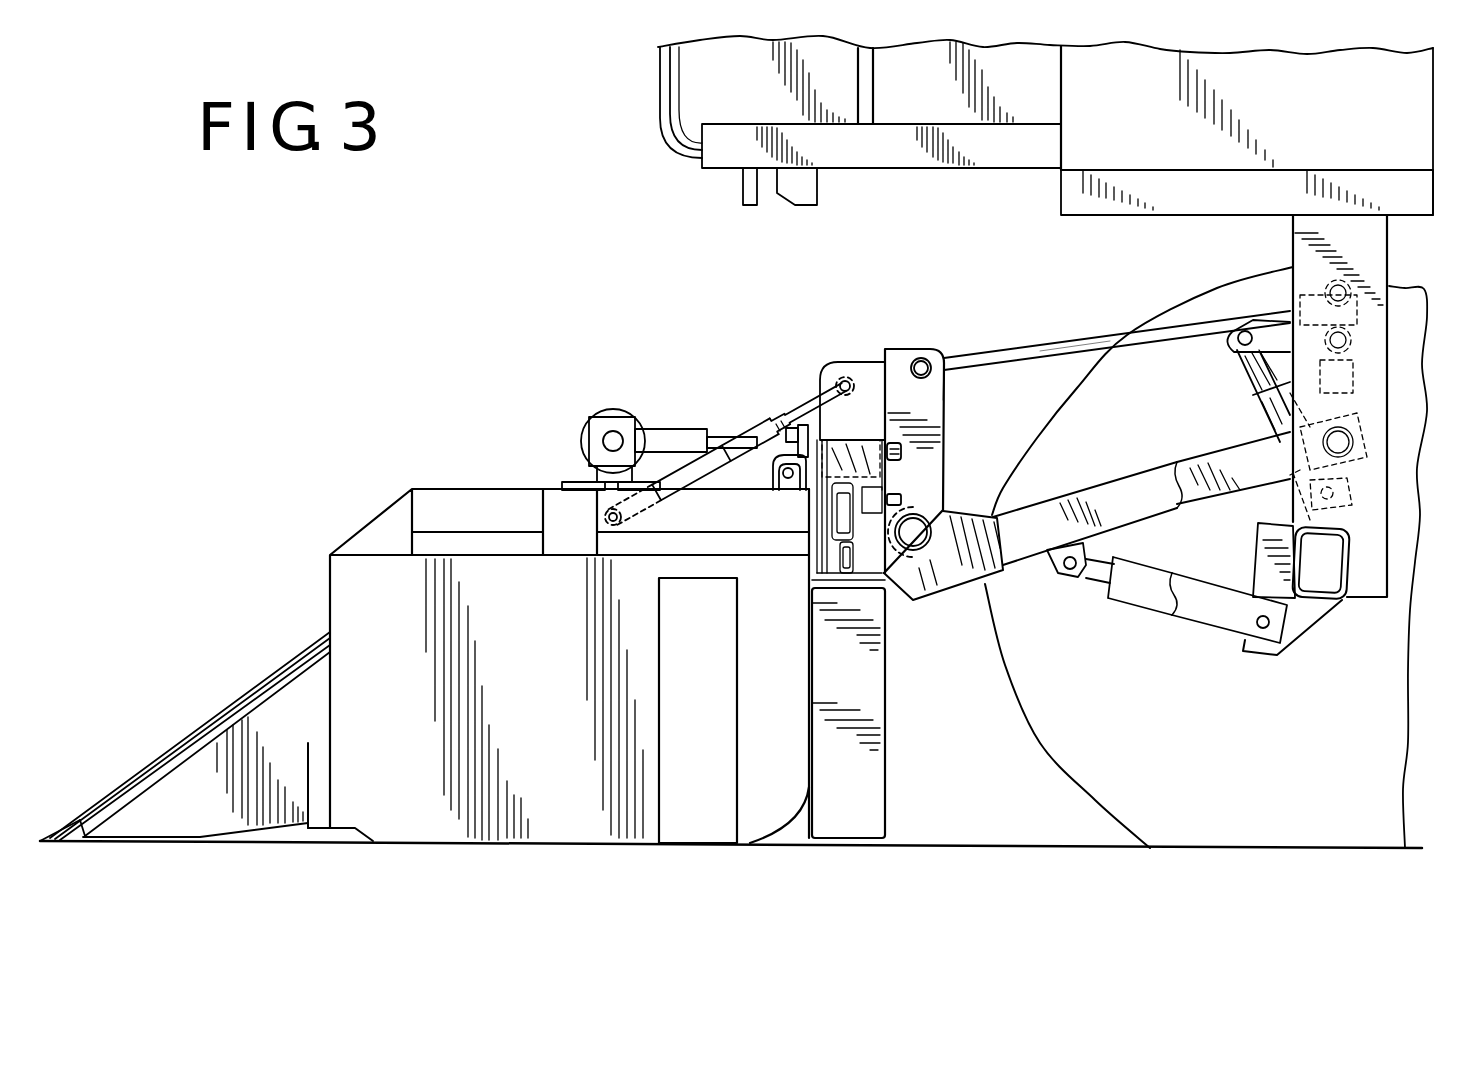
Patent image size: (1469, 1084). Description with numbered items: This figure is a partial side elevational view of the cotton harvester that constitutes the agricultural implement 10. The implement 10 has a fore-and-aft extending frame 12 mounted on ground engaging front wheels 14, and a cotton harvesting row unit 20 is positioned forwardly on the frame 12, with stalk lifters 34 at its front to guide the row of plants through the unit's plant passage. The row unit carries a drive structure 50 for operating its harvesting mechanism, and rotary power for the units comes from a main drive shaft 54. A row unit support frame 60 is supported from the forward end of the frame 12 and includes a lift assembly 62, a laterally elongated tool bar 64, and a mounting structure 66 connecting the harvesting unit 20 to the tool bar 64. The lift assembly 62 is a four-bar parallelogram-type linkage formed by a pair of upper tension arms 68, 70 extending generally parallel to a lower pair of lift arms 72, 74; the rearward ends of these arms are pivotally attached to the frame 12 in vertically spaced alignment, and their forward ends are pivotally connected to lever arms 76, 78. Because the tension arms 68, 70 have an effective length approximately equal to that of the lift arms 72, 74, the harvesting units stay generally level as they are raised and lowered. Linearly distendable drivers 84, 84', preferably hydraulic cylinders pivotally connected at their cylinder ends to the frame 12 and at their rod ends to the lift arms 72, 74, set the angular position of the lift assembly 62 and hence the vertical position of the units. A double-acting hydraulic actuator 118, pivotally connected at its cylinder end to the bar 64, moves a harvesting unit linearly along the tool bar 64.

The agricultural implement 10 is at (660, 153).
The frame 12 is at (1022, 192).
The front wheels 14 is at (1050, 737).
The cotton harvesting row unit 20 is at (537, 672).
The stalk lifters 34 is at (232, 710).
The drive structure 50 is at (610, 428).
The main drive shaft 54 is at (945, 505).
The row unit support frame 60 is at (897, 340).
The lift assembly 62 is at (1123, 347).
The tool bar 64 is at (861, 560).
The mounting structure 66 is at (838, 357).
The upper tension arm 68 is at (1050, 345).
The upper tension arm 70 is at (1147, 327).
The lift arm 72 is at (1103, 493).
The lift arm 74 is at (1207, 460).
The lever arm 76 is at (928, 418).
The lever arm 78 is at (947, 388).
The linearly distendable driver 84 is at (1112, 595).
The linearly distendable driver 84' is at (1255, 600).
The hydraulic cylinder or actuator 118 is at (902, 500).